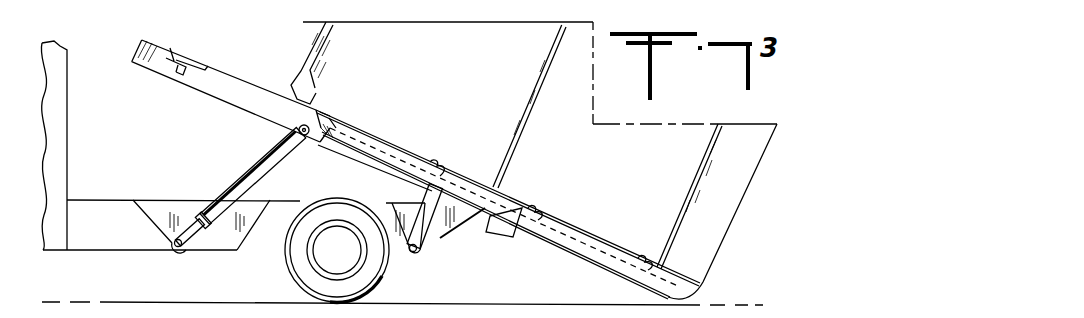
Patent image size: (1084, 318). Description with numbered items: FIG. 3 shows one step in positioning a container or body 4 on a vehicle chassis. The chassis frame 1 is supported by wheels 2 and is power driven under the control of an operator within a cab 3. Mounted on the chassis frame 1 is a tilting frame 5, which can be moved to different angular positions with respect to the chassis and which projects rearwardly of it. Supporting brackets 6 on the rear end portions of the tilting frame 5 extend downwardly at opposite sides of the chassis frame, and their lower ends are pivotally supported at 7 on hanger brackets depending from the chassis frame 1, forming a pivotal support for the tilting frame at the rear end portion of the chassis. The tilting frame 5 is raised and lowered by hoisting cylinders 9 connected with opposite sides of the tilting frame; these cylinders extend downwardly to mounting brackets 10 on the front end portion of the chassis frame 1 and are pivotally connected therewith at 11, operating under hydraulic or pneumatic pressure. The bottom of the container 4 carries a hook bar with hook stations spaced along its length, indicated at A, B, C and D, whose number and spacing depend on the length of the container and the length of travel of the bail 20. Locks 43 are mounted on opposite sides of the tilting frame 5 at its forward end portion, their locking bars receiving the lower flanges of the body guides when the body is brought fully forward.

The chassis frame 1 is at (105, 252).
The wheels 2 is at (290, 258).
The cab 3 is at (67, 50).
The container 4 is at (752, 147).
The tilting frame 5 is at (241, 68).
The supporting brackets 6 is at (447, 236).
The pivotal support 7 is at (414, 249).
The hoisting cylinders 9 is at (252, 176).
The mounting brackets 10 is at (160, 240).
The pivotal connection 11 is at (182, 246).
The bail 20 is at (527, 208).
The locks 43 is at (185, 44).